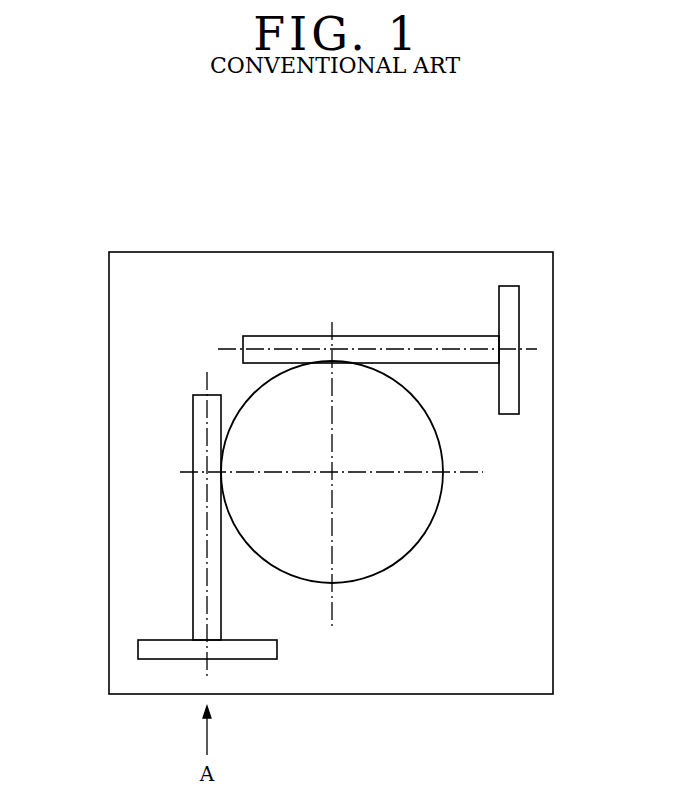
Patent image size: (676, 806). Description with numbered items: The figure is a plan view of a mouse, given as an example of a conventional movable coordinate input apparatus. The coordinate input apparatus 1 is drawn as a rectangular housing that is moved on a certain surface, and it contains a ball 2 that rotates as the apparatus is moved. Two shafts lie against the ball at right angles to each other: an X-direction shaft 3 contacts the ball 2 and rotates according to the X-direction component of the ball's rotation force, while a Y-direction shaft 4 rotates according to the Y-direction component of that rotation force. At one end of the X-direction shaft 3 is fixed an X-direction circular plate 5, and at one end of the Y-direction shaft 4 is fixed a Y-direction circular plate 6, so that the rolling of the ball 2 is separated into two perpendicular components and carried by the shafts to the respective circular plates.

The coordinate input apparatus 1 is at (377, 258).
The ball 2 is at (407, 543).
The X-direction shaft 3 is at (195, 551).
The Y-direction shaft 4 is at (274, 353).
The X-direction circular plate 5 is at (147, 650).
The Y-direction circular plate 6 is at (519, 317).